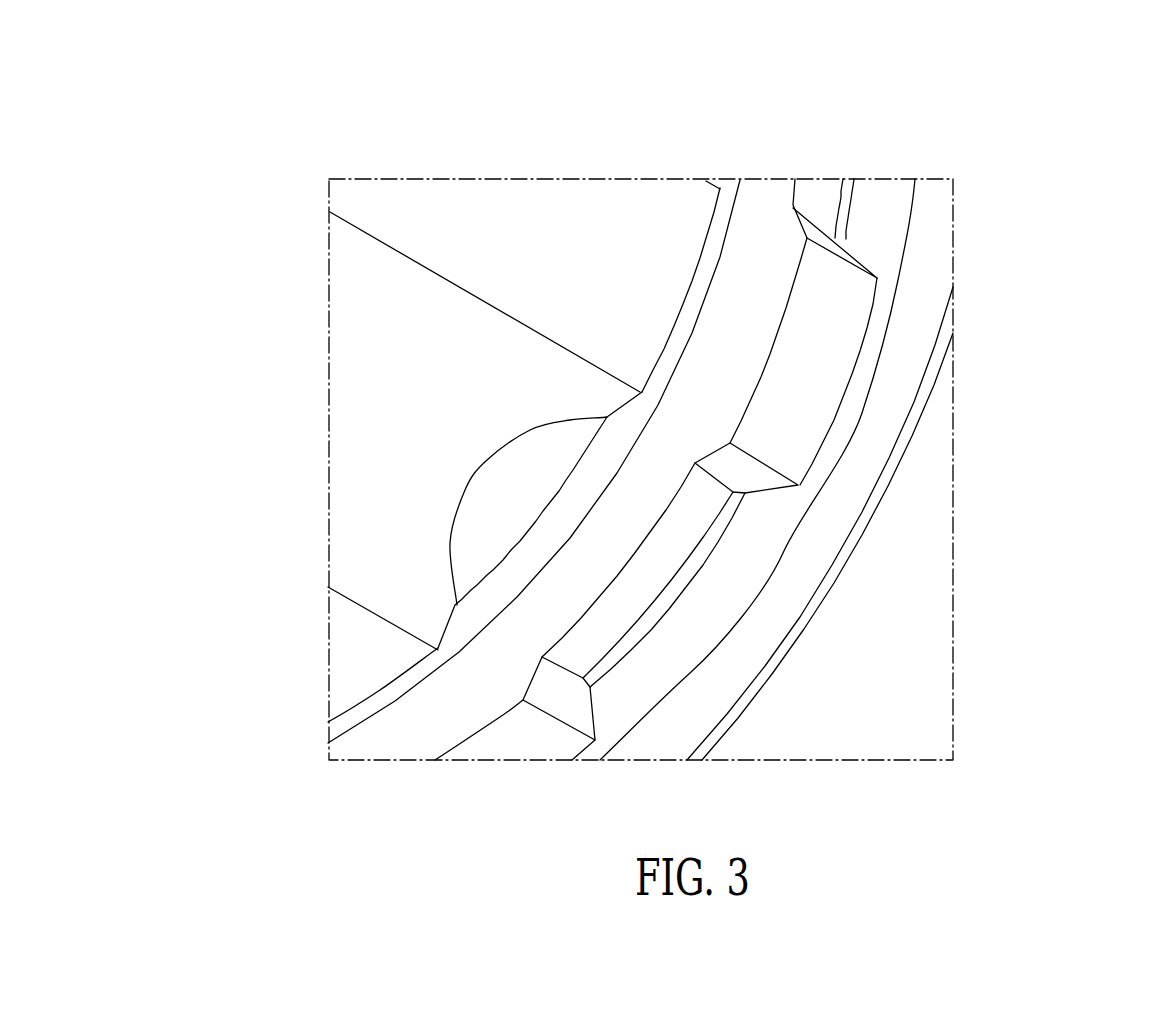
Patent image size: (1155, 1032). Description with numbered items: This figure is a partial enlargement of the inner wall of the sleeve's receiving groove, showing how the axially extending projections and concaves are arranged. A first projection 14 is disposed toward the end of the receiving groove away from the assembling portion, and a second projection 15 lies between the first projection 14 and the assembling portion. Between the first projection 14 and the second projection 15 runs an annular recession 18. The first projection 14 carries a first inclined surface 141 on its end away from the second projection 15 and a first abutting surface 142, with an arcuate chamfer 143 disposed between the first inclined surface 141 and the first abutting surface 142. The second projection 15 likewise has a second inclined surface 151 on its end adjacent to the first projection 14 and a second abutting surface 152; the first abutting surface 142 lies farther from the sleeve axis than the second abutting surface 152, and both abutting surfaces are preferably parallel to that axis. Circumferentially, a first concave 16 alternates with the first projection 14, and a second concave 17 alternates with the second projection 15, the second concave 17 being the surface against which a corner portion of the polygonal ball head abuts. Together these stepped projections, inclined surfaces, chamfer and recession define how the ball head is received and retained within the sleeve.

The first projection 14 is at (1070, 560).
The first inclined surface 141 is at (667, 646).
The first abutting surface 142 is at (700, 515).
The arcuate chamfer 143 is at (683, 582).
The second projection 15 is at (613, 100).
The second inclined surface 151 is at (546, 457).
The second abutting surface 152 is at (445, 338).
The first concave 16 is at (850, 299).
The second concave 17 is at (680, 258).
The annular recession 18 is at (448, 703).